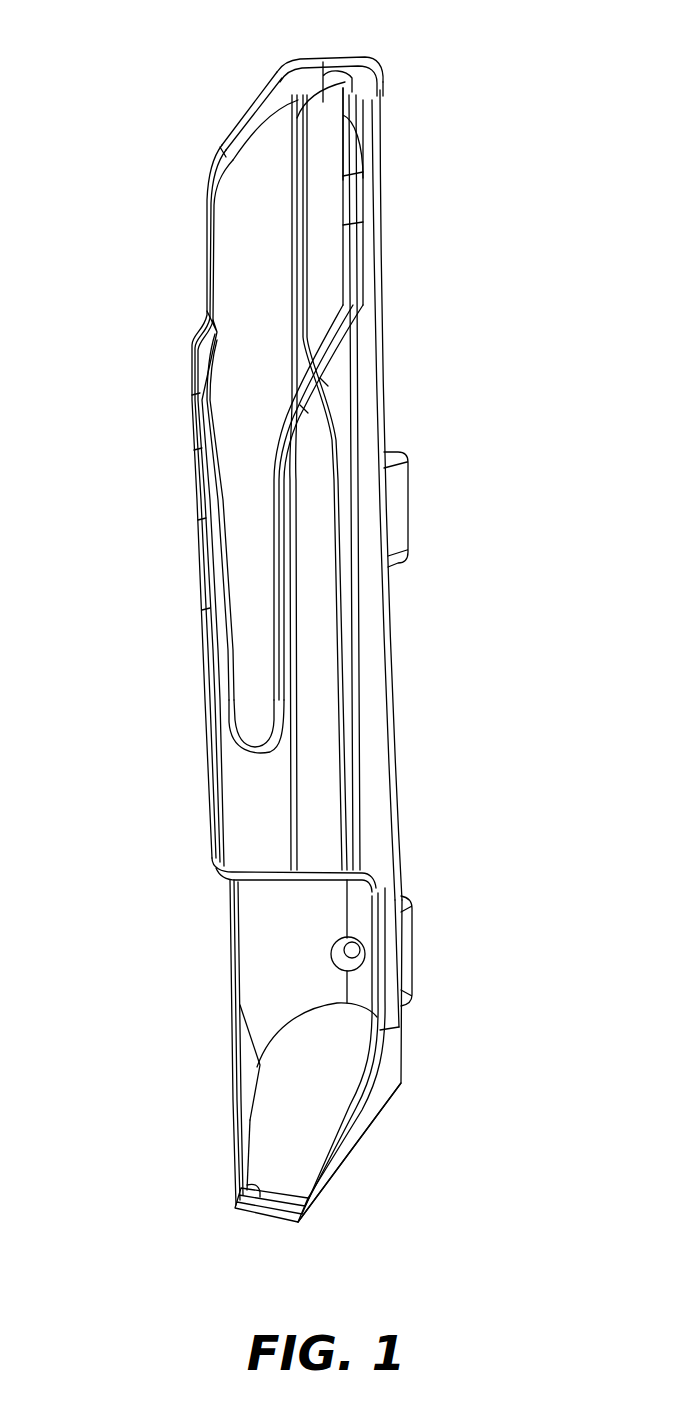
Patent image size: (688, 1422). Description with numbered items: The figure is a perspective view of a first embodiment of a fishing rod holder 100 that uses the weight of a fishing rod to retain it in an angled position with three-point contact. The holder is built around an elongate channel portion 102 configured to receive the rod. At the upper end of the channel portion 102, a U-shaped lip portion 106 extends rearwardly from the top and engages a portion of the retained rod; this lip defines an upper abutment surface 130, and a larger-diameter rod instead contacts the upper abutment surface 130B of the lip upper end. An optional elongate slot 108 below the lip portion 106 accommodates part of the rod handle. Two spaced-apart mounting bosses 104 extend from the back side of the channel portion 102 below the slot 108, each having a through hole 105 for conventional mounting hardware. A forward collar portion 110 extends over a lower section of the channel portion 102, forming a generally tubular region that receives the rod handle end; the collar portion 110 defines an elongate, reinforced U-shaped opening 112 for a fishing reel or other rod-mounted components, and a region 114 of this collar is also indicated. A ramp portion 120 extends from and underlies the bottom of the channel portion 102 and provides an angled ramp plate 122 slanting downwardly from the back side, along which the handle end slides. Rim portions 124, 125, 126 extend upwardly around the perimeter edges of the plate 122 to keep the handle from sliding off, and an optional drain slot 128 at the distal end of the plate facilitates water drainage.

The fishing rod holder 100 is at (100, 379).
The channel portion 102 is at (232, 242).
The mounting bosses 104 is at (410, 507).
The through holes 105 is at (335, 943).
The U-shaped lip portion 106 is at (367, 67).
The slot 108 is at (322, 238).
The collar portion 110 is at (326, 676).
The U-shaped opening 112 is at (268, 650).
The lower body portion 114 is at (268, 796).
The ramp portion 120 is at (412, 1066).
The angled ramp plate 122 is at (305, 1102).
The rim portion 124 is at (242, 1132).
The rim portion 125 is at (273, 1207).
The rim portion 126 is at (370, 1112).
The drain slot 128 is at (253, 1187).
The upper abutment surface 130 is at (333, 67).
The upper abutment surface 130B is at (280, 120).